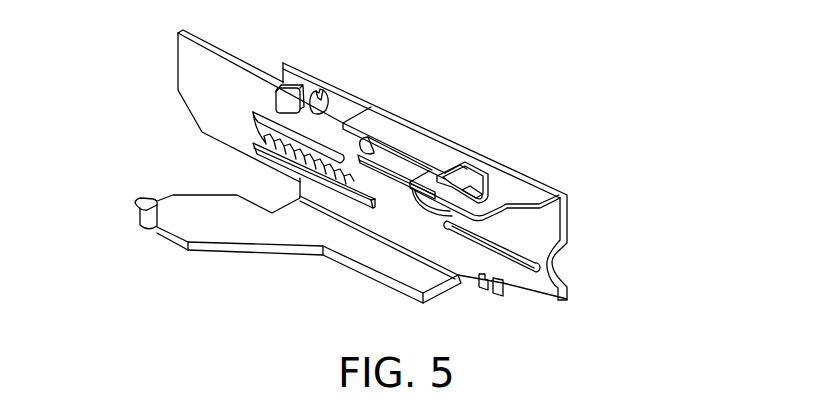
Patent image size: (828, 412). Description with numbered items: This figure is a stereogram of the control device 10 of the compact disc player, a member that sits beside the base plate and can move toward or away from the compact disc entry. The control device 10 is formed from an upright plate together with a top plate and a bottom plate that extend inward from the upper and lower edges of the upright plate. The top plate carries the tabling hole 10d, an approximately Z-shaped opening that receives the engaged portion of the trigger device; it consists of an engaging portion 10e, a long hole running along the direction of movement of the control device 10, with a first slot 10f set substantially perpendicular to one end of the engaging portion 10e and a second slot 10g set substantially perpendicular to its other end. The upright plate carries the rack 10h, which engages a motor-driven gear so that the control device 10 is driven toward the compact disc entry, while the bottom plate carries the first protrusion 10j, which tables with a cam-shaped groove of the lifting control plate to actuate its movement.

The control device 10 is at (560, 263).
The tabling hole 10d is at (523, 129).
The engaging portion 10e is at (472, 170).
The first slot 10f is at (463, 162).
The second slot 10g is at (520, 154).
The rack 10h is at (262, 135).
The first protrusion 10j is at (140, 215).